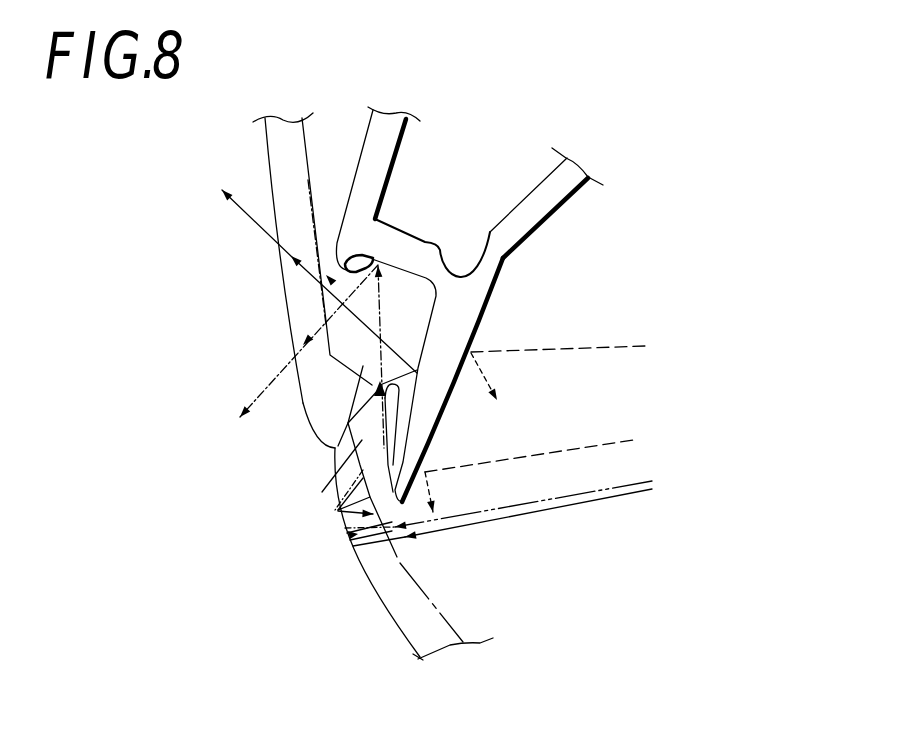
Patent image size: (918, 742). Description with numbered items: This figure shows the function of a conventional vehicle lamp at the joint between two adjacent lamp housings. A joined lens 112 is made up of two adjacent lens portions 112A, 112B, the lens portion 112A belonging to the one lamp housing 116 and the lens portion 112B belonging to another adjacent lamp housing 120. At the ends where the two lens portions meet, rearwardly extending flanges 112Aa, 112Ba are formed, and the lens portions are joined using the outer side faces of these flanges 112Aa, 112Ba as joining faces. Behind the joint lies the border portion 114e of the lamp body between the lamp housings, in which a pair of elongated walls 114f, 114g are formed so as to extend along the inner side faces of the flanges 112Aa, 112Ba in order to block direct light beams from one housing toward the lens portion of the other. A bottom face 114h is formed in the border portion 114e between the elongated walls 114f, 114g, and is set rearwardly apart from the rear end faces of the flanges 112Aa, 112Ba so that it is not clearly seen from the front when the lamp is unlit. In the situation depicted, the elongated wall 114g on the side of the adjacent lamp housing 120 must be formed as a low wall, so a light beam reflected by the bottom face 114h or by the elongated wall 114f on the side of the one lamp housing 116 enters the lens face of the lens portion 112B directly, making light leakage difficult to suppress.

The joined lens 112 is at (273, 338).
The lens portion 112A is at (387, 582).
The flange 112Aa is at (340, 515).
The lens portion 112B is at (282, 157).
The flange 112Ba is at (335, 393).
The border portion 114e is at (522, 253).
The elongated wall 114f is at (432, 428).
The elongated wall 114g is at (372, 257).
The bottom face 114h is at (447, 237).
The lamp housing 116 is at (582, 582).
The lamp housing 120 is at (351, 152).